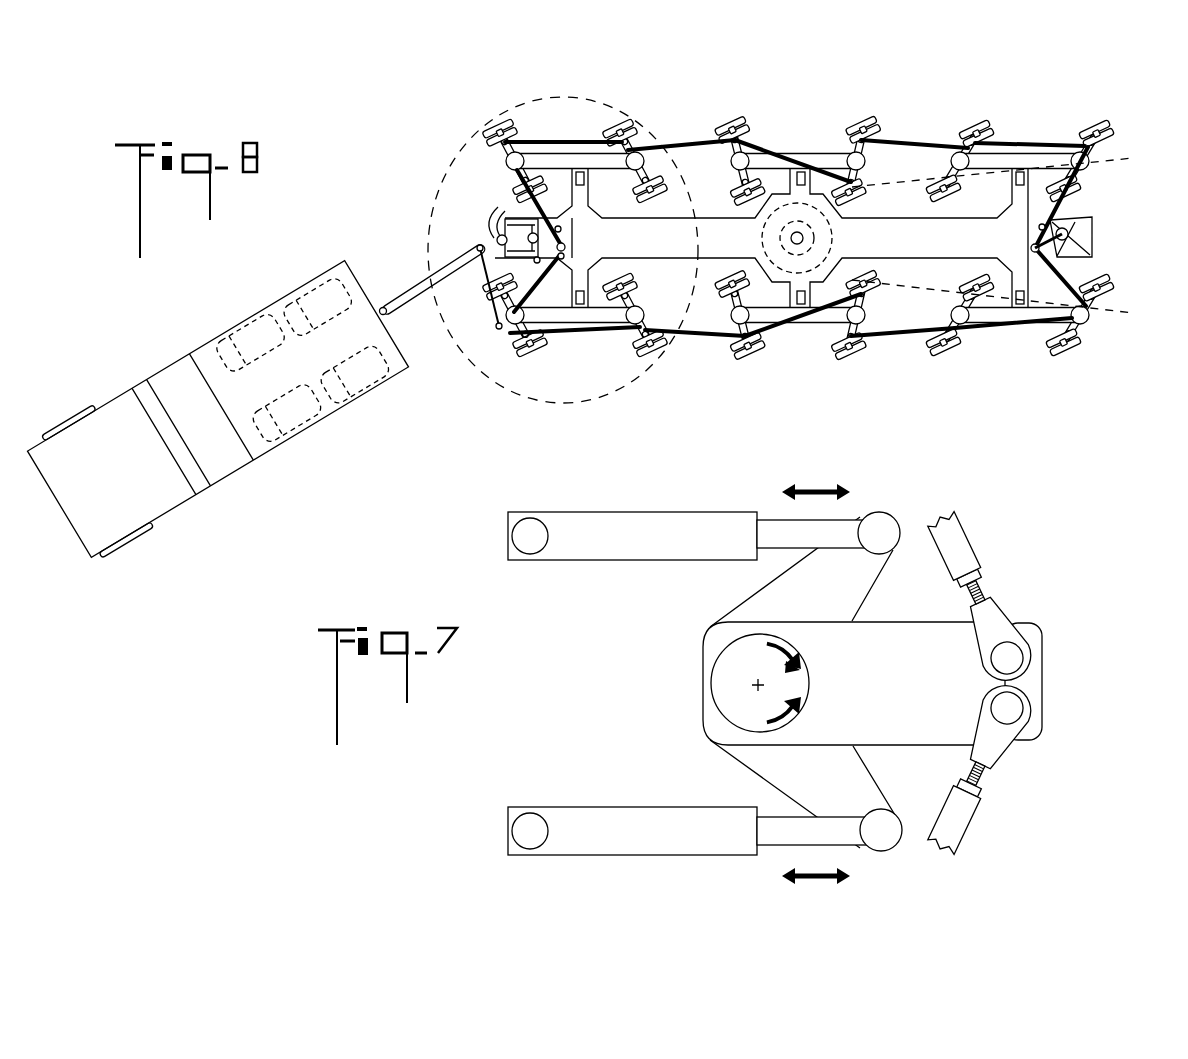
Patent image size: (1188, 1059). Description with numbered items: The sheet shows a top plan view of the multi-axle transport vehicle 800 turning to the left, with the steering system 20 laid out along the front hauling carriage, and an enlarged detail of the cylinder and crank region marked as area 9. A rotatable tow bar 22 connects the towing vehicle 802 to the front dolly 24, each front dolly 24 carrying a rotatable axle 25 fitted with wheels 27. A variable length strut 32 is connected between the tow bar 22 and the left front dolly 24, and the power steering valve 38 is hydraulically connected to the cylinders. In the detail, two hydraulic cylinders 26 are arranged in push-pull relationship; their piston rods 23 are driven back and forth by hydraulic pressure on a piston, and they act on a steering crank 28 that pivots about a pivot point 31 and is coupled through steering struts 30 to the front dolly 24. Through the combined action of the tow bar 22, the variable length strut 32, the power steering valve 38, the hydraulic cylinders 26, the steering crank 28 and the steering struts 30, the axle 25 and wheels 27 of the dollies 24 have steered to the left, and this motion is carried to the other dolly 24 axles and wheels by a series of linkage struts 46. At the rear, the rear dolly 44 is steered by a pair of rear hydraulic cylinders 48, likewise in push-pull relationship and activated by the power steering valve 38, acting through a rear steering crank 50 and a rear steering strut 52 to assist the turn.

In FIG. 8, the detail region of FIG. 9 is at (547, 98).
In FIG. 8, the system for steering the transport vehicle 20 is at (785, 233).
In FIG. 8, the rotatable tow bar 22 is at (397, 294).
In FIG. 7, the piston rods 23 is at (832, 532).
In FIG. 8, the front dolly 24 is at (535, 229).
In FIG. 8, the rotatable axle 25 is at (516, 343).
In FIG. 8, the hydraulic cylinder 26 is at (497, 234).
In FIG. 7, the hydraulic cylinder 26 is at (605, 522).
In FIG. 8, the wheels 27 is at (534, 350).
In FIG. 8, the steering crank 28 is at (561, 234).
In FIG. 7, the steering crank 28 is at (815, 650).
In FIG. 8, the steering strut 30 is at (519, 188).
In FIG. 7, the steering strut 30 is at (960, 550).
In FIG. 7, the pivot point 31 is at (755, 691).
In FIG. 8, the variable length strut 32 is at (497, 319).
In FIG. 8, the power steering valve 38 is at (490, 292).
In FIG. 8, the rear dolly 44 is at (1068, 148).
In FIG. 8, the linkage struts 46 is at (648, 381).
In FIG. 8, the rear hydraulic cylinders 48 is at (1092, 256).
In FIG. 8, the rear steering crank 50 is at (1033, 251).
In FIG. 8, the rear steering strut 52 is at (1073, 212).
In FIG. 8, the multi-axle transport vehicle 800 is at (785, 223).
In FIG. 8, the towing vehicle 802 is at (278, 298).